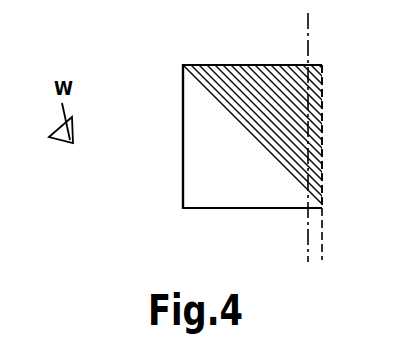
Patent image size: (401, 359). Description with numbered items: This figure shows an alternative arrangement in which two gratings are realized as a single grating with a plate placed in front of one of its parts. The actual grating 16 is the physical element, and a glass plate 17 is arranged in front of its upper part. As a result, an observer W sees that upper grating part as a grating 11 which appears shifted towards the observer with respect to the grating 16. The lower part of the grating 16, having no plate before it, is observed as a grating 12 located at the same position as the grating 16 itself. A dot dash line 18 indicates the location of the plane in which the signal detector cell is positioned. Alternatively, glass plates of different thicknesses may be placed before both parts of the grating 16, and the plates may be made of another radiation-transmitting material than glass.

The grating 11 is at (292, 84).
The actual grating 16 is at (324, 100).
The glass plate 17 is at (188, 178).
The grating 12 is at (323, 230).
The dot dash line 18 is at (306, 248).